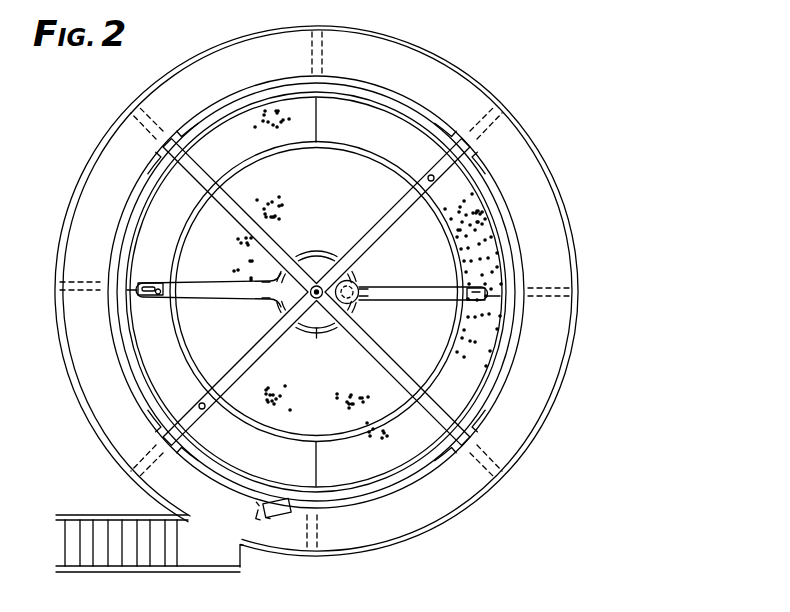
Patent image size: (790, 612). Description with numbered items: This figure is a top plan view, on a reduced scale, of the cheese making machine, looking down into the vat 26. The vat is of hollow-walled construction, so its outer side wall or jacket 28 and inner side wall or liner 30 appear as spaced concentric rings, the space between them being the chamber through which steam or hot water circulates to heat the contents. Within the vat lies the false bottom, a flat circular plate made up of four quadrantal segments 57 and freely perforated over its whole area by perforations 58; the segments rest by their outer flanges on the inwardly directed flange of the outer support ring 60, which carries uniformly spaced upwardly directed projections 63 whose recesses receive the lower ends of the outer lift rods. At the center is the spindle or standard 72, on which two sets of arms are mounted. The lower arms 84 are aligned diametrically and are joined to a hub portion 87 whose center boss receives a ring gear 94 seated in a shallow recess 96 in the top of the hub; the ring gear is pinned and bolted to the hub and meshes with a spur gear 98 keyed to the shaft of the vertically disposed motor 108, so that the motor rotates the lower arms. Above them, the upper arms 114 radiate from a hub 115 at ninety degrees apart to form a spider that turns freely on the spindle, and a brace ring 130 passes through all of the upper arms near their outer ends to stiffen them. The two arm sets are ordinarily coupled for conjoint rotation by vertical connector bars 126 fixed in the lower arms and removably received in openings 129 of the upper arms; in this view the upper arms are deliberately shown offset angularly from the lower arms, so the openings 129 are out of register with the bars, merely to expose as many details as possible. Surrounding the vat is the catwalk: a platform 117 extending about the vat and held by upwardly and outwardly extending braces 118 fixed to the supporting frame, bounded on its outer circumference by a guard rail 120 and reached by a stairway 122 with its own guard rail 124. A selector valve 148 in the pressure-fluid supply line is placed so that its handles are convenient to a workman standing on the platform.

The vat 26 is at (426, 489).
The outer side wall or jacket 28 is at (110, 237).
The inner side wall or liner 30 is at (124, 243).
The segments 57 is at (300, 117).
The perforations 58 is at (500, 263).
The outer support ring 60 is at (145, 342).
The upwardly directed projections 63 is at (194, 141).
The spindle or standard 72 is at (314, 297).
The lower arms 84 is at (211, 283).
The hub portion 87 is at (328, 333).
The ring gear 94 is at (285, 296).
The recess 96 is at (333, 252).
The spur gear 98 is at (357, 283).
The motor 108 is at (355, 301).
The upper arms 114 is at (271, 212).
The hub 115 is at (312, 261).
The platform 117 is at (396, 551).
The braces 118 is at (300, 543).
The guard rail 120 is at (334, 557).
The stairway 122 is at (128, 566).
The guard rail 124 is at (160, 573).
The vertical connector bars 126 is at (152, 283).
The openings 129 is at (428, 179).
The brace ring 130 is at (433, 363).
The selector valve 148 is at (283, 500).